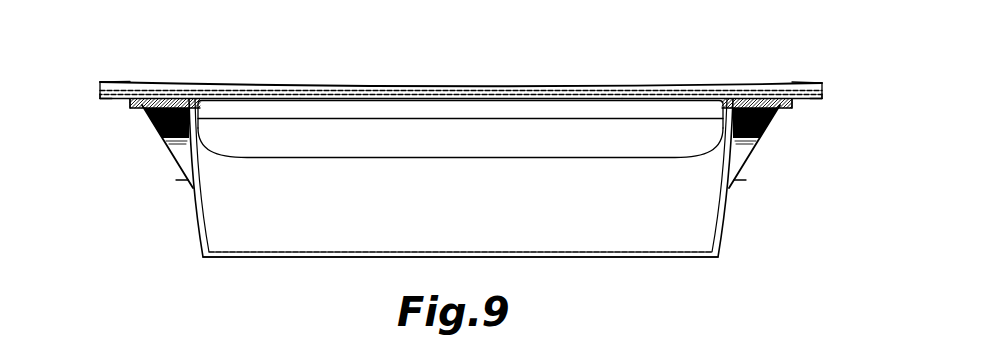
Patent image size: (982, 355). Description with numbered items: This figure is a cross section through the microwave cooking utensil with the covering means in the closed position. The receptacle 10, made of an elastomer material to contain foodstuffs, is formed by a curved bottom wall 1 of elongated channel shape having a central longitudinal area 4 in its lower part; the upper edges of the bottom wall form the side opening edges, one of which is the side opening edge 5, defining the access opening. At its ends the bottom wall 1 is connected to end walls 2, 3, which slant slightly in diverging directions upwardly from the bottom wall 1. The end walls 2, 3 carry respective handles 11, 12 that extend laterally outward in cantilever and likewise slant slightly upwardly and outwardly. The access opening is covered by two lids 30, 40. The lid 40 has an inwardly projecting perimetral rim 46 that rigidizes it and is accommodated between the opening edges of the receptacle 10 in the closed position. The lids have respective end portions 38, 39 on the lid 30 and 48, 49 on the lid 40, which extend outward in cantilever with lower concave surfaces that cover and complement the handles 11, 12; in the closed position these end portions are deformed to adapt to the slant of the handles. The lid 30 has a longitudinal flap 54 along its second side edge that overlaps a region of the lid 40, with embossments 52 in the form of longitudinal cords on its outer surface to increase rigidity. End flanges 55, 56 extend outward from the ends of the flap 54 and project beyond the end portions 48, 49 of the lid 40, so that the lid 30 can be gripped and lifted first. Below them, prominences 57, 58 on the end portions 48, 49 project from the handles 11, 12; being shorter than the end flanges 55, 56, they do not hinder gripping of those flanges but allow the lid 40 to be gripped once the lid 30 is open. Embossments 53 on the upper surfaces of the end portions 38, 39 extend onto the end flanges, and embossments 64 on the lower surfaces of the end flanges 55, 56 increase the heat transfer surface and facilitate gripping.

The bottom wall 1 is at (592, 227).
The end wall 2 is at (190, 150).
The end wall 3 is at (733, 153).
The central longitudinal area 4 is at (527, 252).
The side opening edge 5 is at (395, 160).
The receptacle 10 is at (367, 270).
The handle 11 is at (152, 115).
The handle 12 is at (773, 110).
The lid 30 is at (453, 65).
The end portion 38 is at (152, 88).
The end portion 39 is at (760, 90).
The lid 40 is at (460, 155).
The perimetral rim 46 is at (492, 117).
The end portion 48 is at (165, 93).
The end portion 49 is at (750, 88).
The embossments 52 is at (488, 90).
The embossments 53 is at (126, 80).
The longitudinal flap 54 is at (553, 97).
The end flange 55 is at (100, 82).
The end flange 56 is at (821, 87).
The prominence 57 is at (130, 101).
The prominence 58 is at (791, 101).
The embossments 64 is at (100, 97).